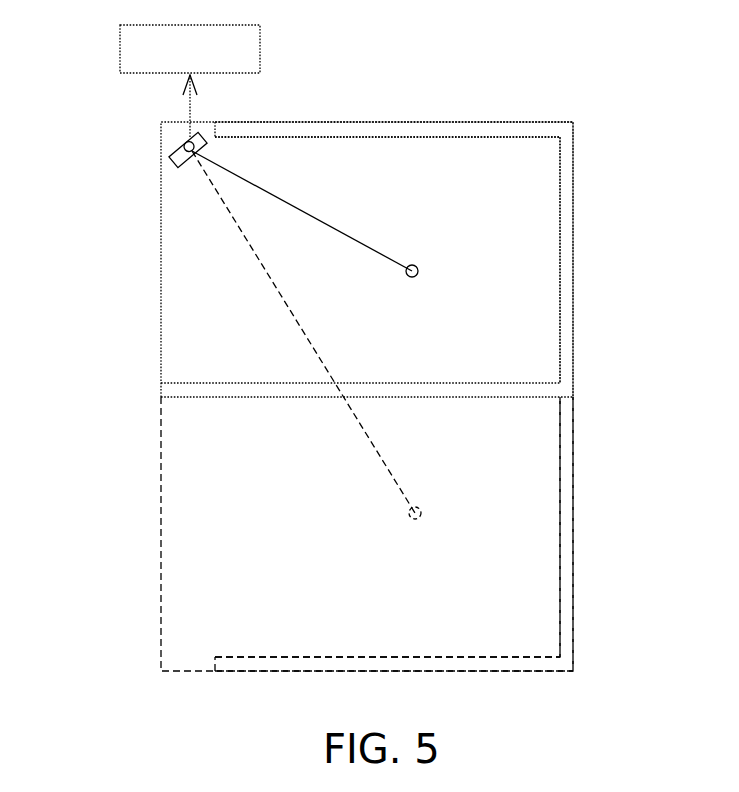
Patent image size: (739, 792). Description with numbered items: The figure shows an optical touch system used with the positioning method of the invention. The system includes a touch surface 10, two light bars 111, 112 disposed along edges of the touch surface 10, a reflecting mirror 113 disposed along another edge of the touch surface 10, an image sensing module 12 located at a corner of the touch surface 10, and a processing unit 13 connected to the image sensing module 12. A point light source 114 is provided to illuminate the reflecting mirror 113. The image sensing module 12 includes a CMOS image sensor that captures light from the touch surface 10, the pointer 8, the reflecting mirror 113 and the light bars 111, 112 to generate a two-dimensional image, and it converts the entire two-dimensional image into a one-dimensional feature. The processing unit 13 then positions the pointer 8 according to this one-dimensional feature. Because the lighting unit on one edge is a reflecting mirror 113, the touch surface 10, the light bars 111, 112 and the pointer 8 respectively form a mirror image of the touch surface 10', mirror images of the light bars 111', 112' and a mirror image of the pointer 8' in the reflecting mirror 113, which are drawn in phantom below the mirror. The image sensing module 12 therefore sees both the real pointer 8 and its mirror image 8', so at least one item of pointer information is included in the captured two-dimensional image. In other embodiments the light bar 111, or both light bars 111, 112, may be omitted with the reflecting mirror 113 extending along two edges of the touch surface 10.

The touch surface 10 is at (315, 259).
The mirror image of touch surface 10' is at (316, 534).
The light bar 111 is at (447, 103).
The mirror image of light bar 111' is at (435, 677).
The light bar 112 is at (627, 259).
The mirror image of light bar 112' is at (631, 534).
The reflecting mirror 113 is at (161, 392).
The point light source 114 is at (184, 137).
The image sensing module 12 is at (182, 148).
The processing unit 13 is at (261, 50).
The pointer 8 is at (450, 289).
The mirror image of pointer 8' is at (459, 533).